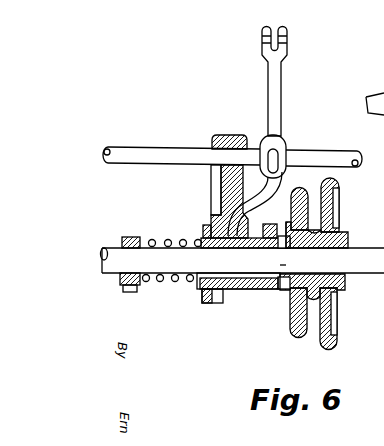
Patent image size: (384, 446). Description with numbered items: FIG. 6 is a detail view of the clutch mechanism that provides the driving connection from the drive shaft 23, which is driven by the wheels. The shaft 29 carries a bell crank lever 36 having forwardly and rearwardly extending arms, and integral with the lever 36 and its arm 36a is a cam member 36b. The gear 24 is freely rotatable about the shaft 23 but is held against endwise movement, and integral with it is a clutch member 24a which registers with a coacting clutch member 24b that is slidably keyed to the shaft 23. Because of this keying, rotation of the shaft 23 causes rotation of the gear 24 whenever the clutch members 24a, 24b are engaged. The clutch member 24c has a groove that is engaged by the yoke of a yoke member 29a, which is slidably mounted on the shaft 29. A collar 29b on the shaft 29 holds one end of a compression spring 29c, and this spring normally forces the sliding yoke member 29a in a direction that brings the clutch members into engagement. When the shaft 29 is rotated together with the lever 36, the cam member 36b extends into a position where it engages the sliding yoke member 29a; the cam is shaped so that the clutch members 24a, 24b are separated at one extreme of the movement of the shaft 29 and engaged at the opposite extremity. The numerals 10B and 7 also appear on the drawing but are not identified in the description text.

The drive shaft 23 is at (120, 263).
The shaft 29 is at (178, 160).
The yoke member 29a is at (213, 171).
The collar 29b is at (145, 223).
The compression spring 29c is at (184, 223).
The bell crank lever 36 is at (282, 84).
The arm 36a is at (284, 143).
The cam member 36b is at (255, 204).
The gear 24 is at (338, 194).
The clutch member 24a is at (288, 220).
The clutch member 24b is at (278, 303).
The clutch member 24c is at (243, 289).
The chain wheel 10B is at (310, 213).
The section line 7- 7 is at (283, 263).